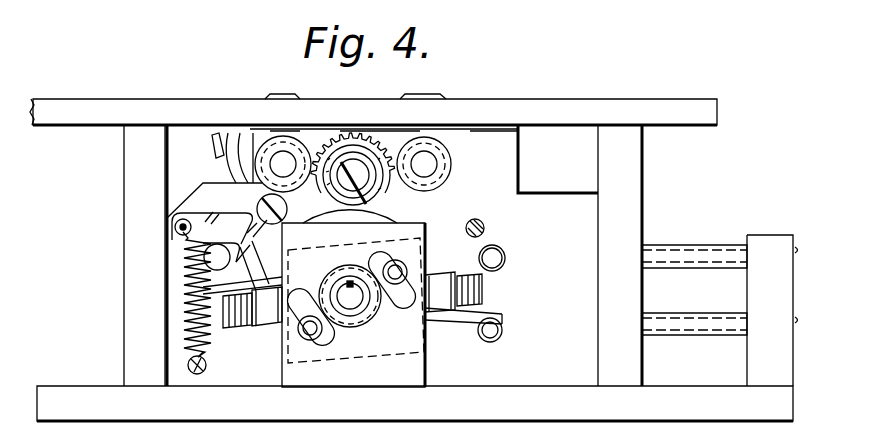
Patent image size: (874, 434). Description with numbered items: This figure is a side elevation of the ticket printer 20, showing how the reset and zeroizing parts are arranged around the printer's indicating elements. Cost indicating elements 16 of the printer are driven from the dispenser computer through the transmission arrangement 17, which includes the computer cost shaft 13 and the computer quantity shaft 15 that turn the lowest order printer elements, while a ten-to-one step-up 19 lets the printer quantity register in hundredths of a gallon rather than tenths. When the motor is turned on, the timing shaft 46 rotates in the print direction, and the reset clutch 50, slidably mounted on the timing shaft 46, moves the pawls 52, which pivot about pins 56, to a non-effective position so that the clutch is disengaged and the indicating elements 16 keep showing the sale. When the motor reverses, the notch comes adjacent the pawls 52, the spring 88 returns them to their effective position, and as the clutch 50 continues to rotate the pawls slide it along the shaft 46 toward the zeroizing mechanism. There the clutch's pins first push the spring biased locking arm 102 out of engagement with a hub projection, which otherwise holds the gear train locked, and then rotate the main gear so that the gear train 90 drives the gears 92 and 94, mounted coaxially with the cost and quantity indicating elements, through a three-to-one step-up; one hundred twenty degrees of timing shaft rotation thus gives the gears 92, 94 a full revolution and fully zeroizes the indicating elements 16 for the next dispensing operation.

The ticket printer 20 is at (487, 93).
The ten-to-one step-up 19 is at (420, 99).
The cost indicating elements 16 is at (230, 134).
The transmission arrangement 17 is at (720, 287).
The computer cost shaft 13 is at (659, 250).
The computer quantity shaft 15 is at (718, 333).
The gear 92 is at (261, 159).
The gear 94 is at (453, 158).
The gear train 90 is at (353, 130).
The reset clutch 50 is at (388, 207).
The spring biased locking arm 102 is at (181, 234).
The pawls 52 is at (270, 326).
The pins 56 is at (239, 322).
The spring 88 is at (219, 365).
The timing shaft 46 is at (350, 303).